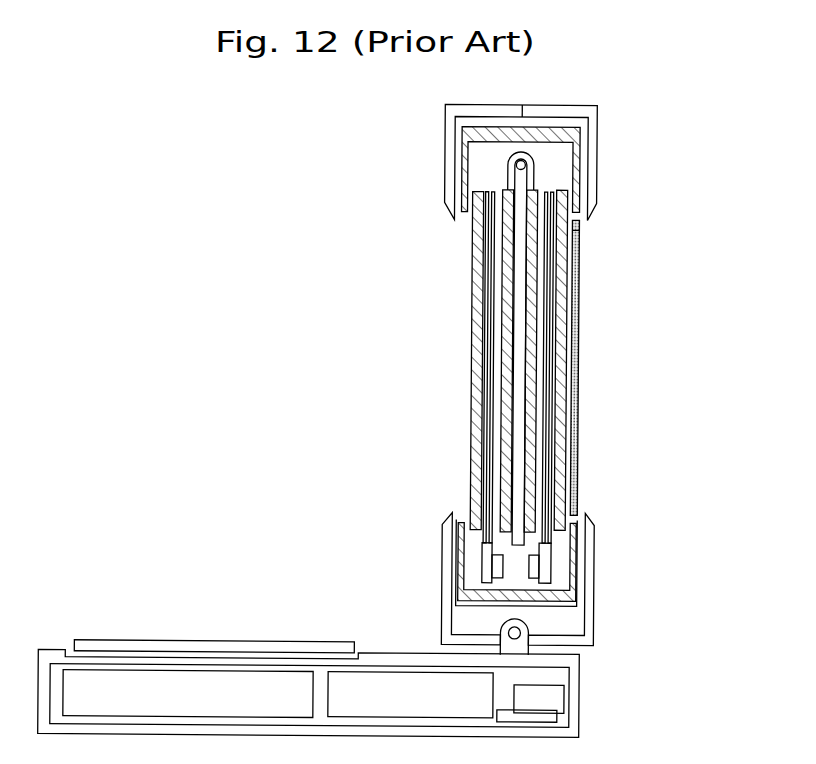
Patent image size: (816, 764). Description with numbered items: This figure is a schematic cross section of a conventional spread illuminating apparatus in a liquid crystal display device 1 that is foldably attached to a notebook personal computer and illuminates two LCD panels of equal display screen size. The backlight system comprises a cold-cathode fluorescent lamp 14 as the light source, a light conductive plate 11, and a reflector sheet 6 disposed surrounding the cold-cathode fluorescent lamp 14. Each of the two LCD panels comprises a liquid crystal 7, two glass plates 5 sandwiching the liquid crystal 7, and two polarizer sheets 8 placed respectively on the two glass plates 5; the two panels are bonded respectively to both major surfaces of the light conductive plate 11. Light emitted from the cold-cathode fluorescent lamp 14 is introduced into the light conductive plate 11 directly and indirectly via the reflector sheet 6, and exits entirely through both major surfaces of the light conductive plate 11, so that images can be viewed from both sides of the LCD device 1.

The liquid crystal display device 1 is at (350, 320).
The glass plates 5 is at (490, 440).
The reflector sheet 6 is at (525, 157).
The liquid crystal 7 is at (495, 498).
The polarizer sheets 8 is at (482, 320).
The light conductive plate 11 is at (515, 350).
The cold-cathode fluorescent lamp 14 is at (520, 165).